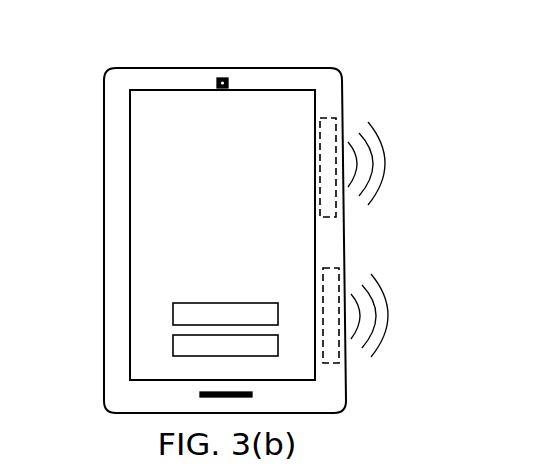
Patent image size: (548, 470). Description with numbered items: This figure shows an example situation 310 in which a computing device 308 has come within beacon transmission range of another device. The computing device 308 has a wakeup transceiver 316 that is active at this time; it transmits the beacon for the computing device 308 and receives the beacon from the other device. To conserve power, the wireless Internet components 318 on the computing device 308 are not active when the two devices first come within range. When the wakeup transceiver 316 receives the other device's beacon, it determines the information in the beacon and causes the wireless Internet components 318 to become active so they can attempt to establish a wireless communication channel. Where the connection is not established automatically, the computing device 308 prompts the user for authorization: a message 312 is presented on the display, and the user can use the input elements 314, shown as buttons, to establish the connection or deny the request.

The computing device 308 is at (103, 143).
The example situation 310 is at (485, 84).
The message 312 is at (90, 210).
The input elements 314 is at (95, 330).
The wakeup transceiver 316 is at (336, 217).
The wireless Internet components 318 is at (339, 363).